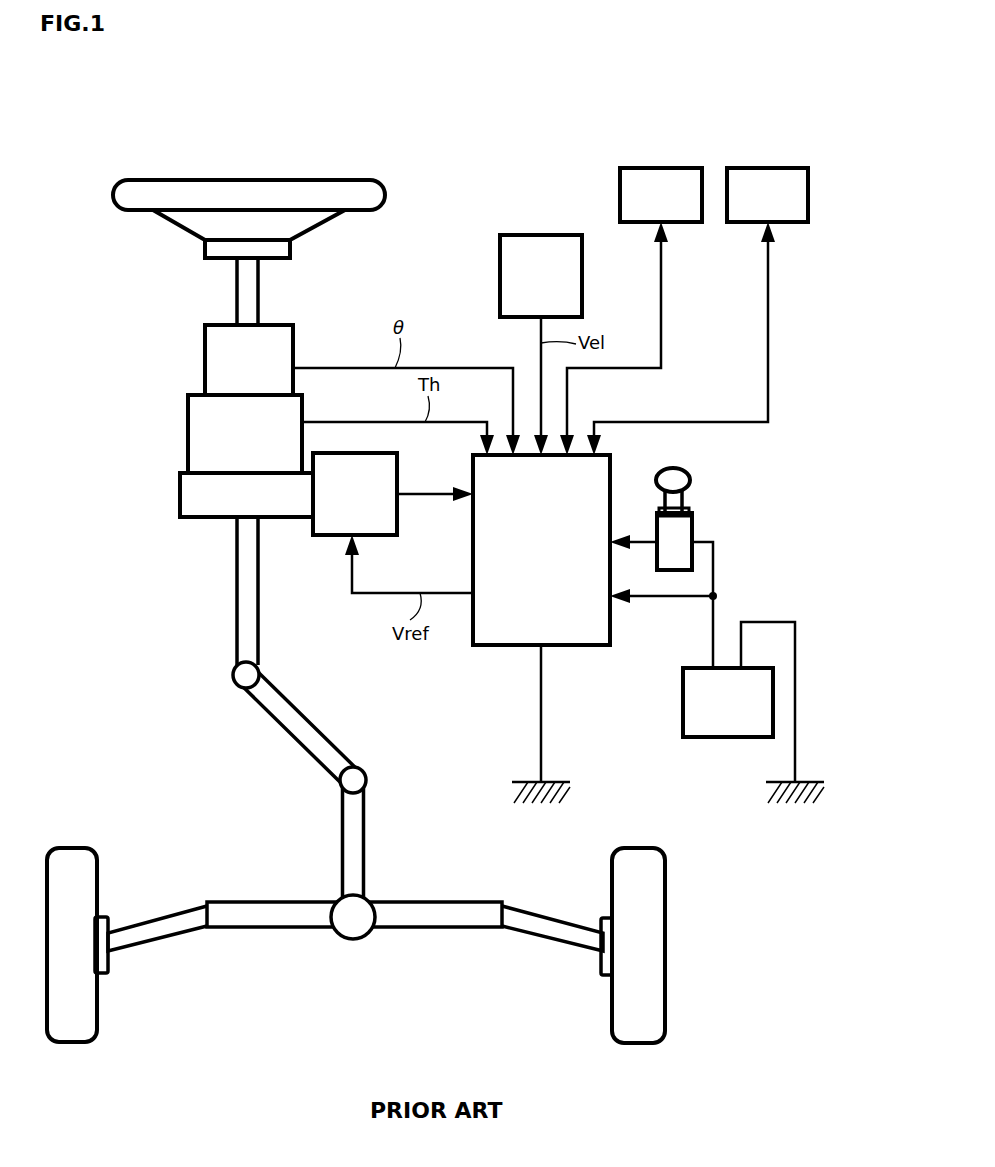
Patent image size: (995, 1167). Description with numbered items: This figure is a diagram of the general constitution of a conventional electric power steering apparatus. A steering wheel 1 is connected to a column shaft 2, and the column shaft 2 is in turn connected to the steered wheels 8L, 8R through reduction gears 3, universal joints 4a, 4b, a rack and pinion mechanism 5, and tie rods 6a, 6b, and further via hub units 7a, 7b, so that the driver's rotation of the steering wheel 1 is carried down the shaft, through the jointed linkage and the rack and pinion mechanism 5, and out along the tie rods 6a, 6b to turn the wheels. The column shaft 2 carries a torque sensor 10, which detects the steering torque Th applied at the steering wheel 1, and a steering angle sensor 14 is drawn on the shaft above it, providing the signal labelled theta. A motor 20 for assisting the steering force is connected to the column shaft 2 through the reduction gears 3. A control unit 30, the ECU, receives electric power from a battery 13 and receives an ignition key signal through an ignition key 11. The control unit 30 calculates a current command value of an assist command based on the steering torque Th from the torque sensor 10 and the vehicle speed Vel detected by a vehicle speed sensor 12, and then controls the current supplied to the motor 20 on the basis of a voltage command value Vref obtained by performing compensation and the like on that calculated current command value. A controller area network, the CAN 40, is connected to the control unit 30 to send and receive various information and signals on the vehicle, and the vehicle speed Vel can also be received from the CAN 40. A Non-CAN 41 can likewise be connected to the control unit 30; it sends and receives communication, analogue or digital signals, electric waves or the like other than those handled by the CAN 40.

The steering wheel 1 is at (385, 190).
The column shaft 2 is at (237, 300).
The steering angle sensor 14 is at (205, 362).
The torque sensor 10 is at (188, 425).
The reduction gears 3 is at (180, 500).
The universal joint 4a is at (233, 676).
The universal joint 4b is at (340, 781).
The rack and pinion mechanism 5 is at (367, 900).
The tie rod 6a is at (135, 915).
The tie rod 6b is at (530, 914).
The hub unit 7a is at (110, 975).
The hub unit 7b is at (600, 975).
The steered wheel 8L is at (98, 1035).
The steered wheel 8R is at (613, 1035).
The motor 20 is at (397, 462).
The control unit 30 is at (610, 462).
The ignition key 11 is at (690, 479).
The vehicle speed sensor 12 is at (582, 247).
The battery 13 is at (683, 697).
The CAN 40 is at (792, 168).
The Non-CAN 41 is at (686, 168).